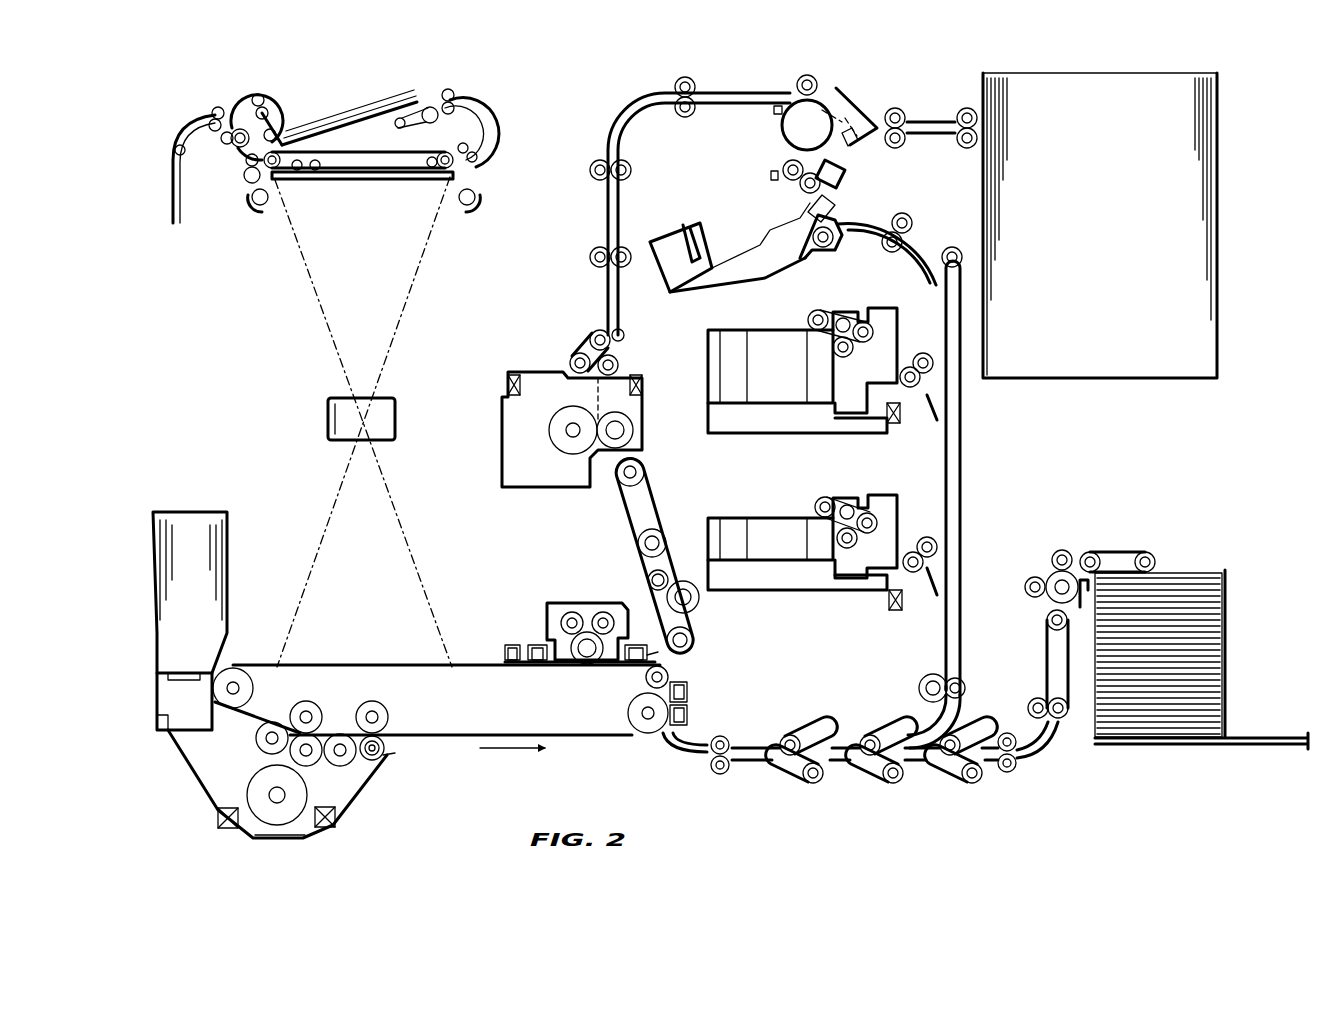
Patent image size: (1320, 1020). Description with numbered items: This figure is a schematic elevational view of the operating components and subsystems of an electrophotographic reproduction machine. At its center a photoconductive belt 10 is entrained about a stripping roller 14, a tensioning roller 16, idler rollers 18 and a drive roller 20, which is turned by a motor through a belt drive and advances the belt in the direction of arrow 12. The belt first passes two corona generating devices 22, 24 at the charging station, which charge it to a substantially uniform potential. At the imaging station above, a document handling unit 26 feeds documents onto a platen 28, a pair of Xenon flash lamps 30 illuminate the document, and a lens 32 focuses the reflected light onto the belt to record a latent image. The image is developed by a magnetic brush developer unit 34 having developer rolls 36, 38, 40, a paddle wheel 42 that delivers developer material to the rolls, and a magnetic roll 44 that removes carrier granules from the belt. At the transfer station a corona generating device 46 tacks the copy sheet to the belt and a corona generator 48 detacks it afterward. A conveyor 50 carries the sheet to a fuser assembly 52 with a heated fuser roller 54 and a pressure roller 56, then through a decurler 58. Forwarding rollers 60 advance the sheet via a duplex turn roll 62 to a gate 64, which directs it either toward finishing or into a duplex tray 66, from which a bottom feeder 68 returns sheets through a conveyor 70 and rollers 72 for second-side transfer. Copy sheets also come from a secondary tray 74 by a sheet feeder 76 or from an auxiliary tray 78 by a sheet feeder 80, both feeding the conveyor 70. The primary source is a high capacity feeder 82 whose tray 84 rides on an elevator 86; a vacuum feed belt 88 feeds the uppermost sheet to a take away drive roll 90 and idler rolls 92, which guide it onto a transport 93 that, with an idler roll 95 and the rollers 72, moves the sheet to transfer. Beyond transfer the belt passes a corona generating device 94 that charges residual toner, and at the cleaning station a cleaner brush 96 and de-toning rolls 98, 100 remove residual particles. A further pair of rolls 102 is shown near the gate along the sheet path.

The photoconductive belt 10 is at (480, 665).
The arrow 12 is at (530, 755).
The stripping roller 14 is at (642, 678).
The tensioning roller 16 is at (248, 672).
The idler rollers 18 is at (372, 703).
The drive roller 20 is at (628, 722).
The corona generating device 22 is at (533, 645).
The corona generating device 24 is at (497, 645).
The document handling unit 26 is at (500, 128).
The platen 28 is at (400, 178).
The Xenon flash lamps 30 is at (270, 203).
The lens 32 is at (392, 420).
The magnetic brush developer unit 34 is at (388, 778).
The developer roll 36 is at (250, 754).
The developer roll 38 is at (275, 762).
The developer roll 40 is at (328, 775).
The paddle wheel 42 is at (222, 818).
The magnetic roll 44 is at (388, 762).
The corona generating device 46 is at (690, 720).
The corona generator 48 is at (690, 686).
The conveyor 50 is at (700, 618).
The fuser assembly 52 is at (662, 390).
The heated fuser roller 54 is at (558, 435).
The pressure roller 56 is at (623, 433).
The decurler 58 is at (592, 350).
The forwarding rollers 60 is at (598, 165).
The duplex turn roll 62 is at (816, 127).
The gate 64 is at (857, 110).
The duplex tray 66 is at (730, 265).
The bottom feeder 68 is at (818, 250).
The conveyor 70 is at (963, 462).
The rollers 72 is at (705, 752).
The secondary tray 74 is at (800, 425).
The sheet feeder 76 is at (833, 315).
The auxiliary tray 78 is at (848, 588).
The sheet feeder 80 is at (823, 500).
The high capacity feeder 82 is at (1252, 555).
The tray 84 is at (1183, 712).
The elevator 86 is at (1192, 740).
The vacuum feed belt 88 is at (1120, 550).
The take away drive roll 90 is at (1050, 592).
The idler rolls 92 is at (1035, 575).
The transport 93 is at (1047, 662).
The corona generating device 94 is at (648, 656).
The idler roll 95 is at (1050, 727).
The cleaner brush 96 is at (572, 612).
The de-toning roll 98 is at (603, 612).
The de-toning roll 100 is at (568, 612).
The rollers 102 is at (958, 83).